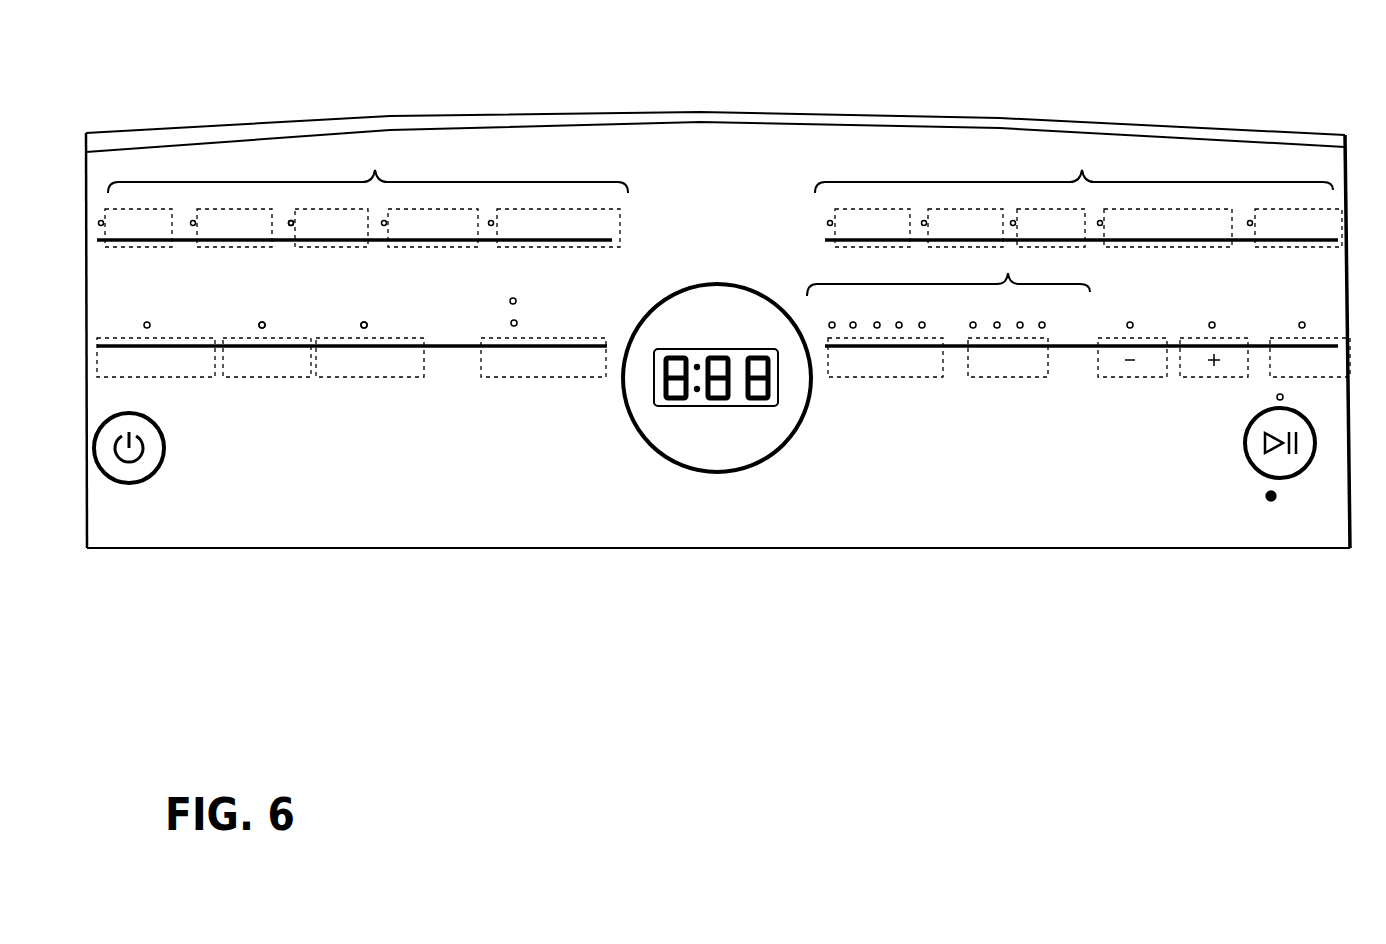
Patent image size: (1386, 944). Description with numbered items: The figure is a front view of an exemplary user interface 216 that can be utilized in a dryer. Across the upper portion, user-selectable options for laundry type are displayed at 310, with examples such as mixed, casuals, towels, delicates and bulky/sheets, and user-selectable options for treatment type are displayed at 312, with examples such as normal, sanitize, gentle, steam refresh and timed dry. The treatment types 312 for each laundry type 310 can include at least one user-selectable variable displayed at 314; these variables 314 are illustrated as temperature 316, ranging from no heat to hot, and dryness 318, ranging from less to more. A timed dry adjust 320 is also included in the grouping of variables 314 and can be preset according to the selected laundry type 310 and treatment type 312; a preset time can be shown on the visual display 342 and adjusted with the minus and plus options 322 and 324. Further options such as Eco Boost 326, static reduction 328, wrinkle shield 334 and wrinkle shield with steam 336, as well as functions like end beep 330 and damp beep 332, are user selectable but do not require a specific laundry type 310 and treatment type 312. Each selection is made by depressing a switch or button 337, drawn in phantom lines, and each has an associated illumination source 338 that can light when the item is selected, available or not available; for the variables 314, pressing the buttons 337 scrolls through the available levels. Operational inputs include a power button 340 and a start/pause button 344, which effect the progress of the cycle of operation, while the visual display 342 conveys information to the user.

The user interface 216 is at (718, 294).
The user-selectable laundry types 310 is at (362, 194).
The user-selectable treatment types 312 is at (1078, 194).
The user-selectable variables 314 is at (948, 285).
The temperature 316 is at (900, 377).
The dryness 318 is at (1003, 377).
The timed dry adjust 320 is at (1196, 292).
The minus option 322 is at (1127, 377).
The plus option 324 is at (1212, 377).
The Eco Boost option 326 is at (1320, 377).
The static reduction option 328 is at (177, 377).
The end beep function 330 is at (262, 377).
The damp beep function 332 is at (372, 377).
The wrinkle shield option 334 is at (514, 323).
The wrinkle shield with steam option 336 is at (513, 301).
The switch or button 337 is at (385, 377).
The illumination source 338 is at (364, 322).
The power button 340 is at (142, 482).
The visual display 342 is at (738, 406).
The start/pause button 344 is at (1253, 470).